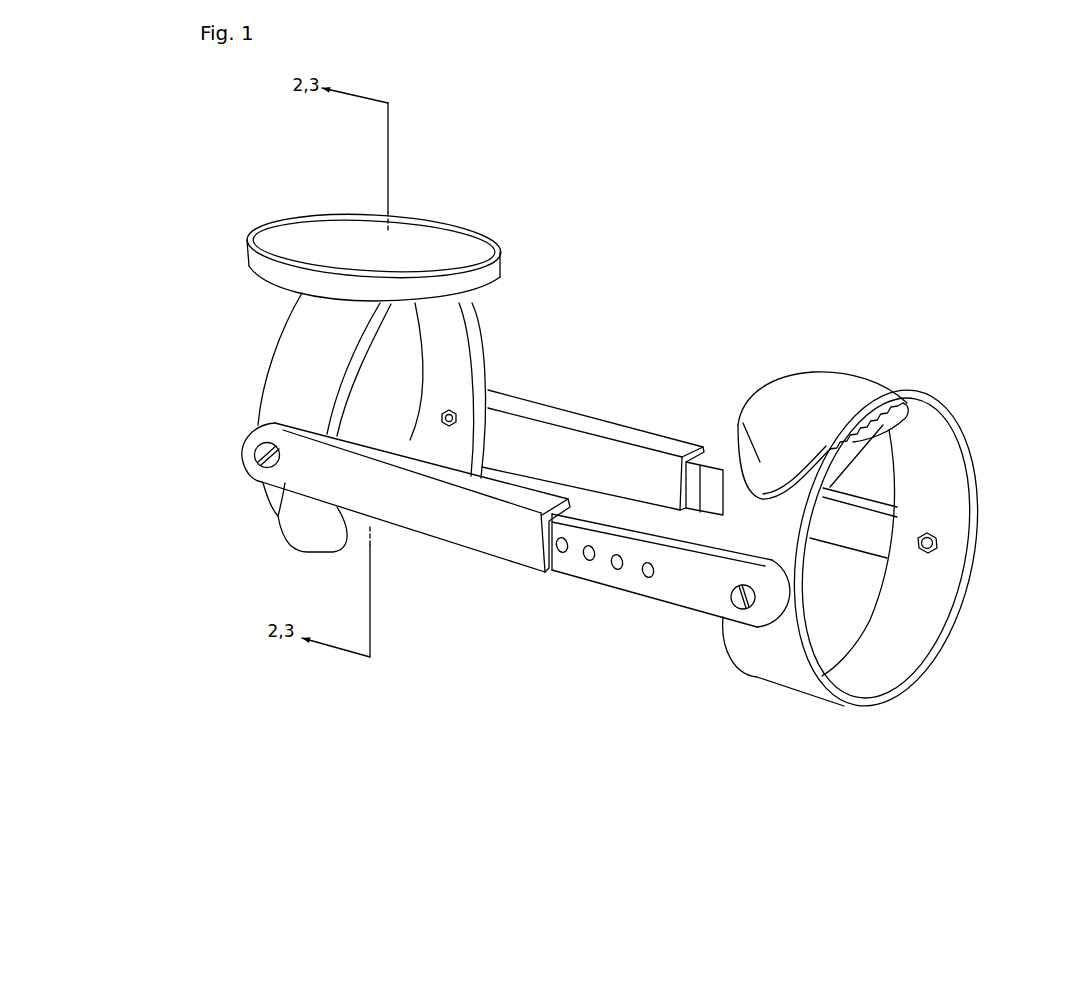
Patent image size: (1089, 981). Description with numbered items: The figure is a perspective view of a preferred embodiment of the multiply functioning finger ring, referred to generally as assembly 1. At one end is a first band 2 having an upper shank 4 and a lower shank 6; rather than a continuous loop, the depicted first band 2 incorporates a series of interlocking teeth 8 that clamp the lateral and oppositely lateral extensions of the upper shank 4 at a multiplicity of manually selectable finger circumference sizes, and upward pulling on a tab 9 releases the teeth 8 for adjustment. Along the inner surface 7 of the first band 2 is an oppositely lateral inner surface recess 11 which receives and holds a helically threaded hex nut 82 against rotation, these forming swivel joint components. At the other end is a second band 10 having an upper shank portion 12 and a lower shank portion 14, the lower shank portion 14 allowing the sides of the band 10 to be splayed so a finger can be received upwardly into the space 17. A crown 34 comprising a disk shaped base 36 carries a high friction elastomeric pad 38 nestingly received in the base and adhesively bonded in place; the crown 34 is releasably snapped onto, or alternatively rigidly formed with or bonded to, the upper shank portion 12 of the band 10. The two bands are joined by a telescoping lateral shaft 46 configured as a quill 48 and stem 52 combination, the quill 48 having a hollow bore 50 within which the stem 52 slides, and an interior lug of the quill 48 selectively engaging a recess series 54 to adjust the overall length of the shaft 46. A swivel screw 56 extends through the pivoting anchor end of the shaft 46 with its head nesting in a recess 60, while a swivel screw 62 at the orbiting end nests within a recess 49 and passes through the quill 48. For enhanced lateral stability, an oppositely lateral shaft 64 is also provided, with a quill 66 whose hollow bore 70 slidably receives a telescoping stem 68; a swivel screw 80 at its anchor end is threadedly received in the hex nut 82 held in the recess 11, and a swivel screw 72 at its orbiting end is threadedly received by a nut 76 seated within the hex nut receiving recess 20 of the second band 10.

The multiply functioning finger ring 1 is at (654, 320).
The first band 2 is at (982, 495).
The upper shank 4 is at (953, 427).
The lower shank 6 is at (887, 693).
The ring inner surface 7 is at (918, 553).
The interlocking teeth 8 is at (902, 418).
The tab 9 is at (739, 425).
The second band 10 is at (255, 384).
The inner surface recess 11 is at (938, 543).
The upper shank portion 12 is at (307, 324).
The lower shank portion 14 is at (307, 532).
The space 17 is at (410, 343).
The hex nut receiving recess 20 is at (440, 414).
The crown 34 is at (272, 212).
The base 36 is at (488, 272).
The high friction elastomeric pad 38 is at (437, 228).
The lateral shaft 46 is at (495, 565).
The quill 48 is at (438, 523).
The recess 49 is at (278, 515).
The hollow bore 50 is at (560, 567).
The stem 52 is at (660, 588).
The recess series 54 is at (616, 565).
The swivel screw 56 is at (733, 588).
The recess 60 is at (746, 620).
The swivel screw 62 is at (260, 452).
The oppositely lateral shaft 64 is at (641, 418).
The quill 66 is at (550, 413).
The telescoping stem 68 is at (716, 450).
The hollow bore 70 is at (700, 478).
The swivel screw 72 is at (437, 420).
The nut 76 is at (494, 411).
The swivel screw 80 is at (933, 555).
The hex nut 82 is at (937, 555).